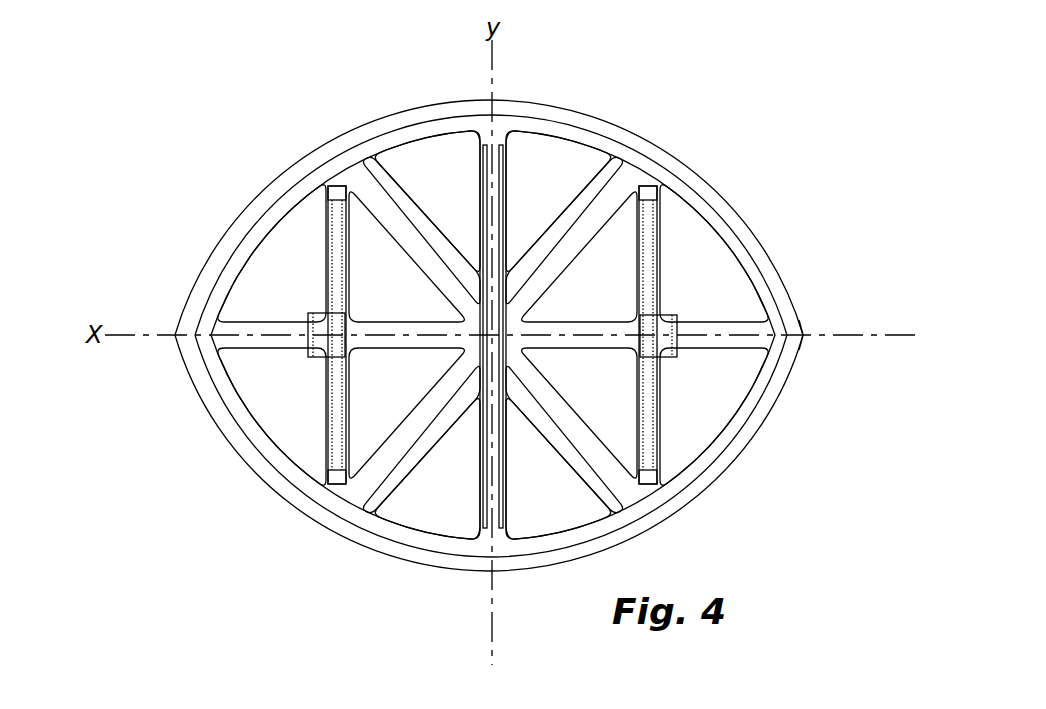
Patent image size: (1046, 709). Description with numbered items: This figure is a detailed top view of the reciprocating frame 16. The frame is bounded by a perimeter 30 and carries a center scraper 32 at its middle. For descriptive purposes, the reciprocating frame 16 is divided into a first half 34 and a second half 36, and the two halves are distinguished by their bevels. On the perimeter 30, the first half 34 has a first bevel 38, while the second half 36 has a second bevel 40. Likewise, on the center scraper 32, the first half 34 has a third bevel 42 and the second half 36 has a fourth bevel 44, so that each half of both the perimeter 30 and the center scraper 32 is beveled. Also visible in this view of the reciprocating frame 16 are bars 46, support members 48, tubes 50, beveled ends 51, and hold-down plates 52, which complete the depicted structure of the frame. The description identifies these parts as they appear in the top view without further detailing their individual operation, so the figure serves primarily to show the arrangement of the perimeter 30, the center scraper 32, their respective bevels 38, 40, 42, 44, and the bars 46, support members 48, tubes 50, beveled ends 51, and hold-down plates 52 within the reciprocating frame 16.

The reciprocating frame 16 is at (247, 156).
The perimeter 30 is at (799, 334).
The center scraper 32 is at (573, 210).
The first half 34 is at (752, 208).
The second half 36 is at (708, 502).
The first bevel 38 is at (617, 117).
The second bevel 40 is at (328, 535).
The third bevel 42 is at (397, 183).
The fourth bevel 44 is at (406, 490).
The bars 46 is at (498, 181).
The support members 48 is at (321, 262).
The tubes 50 is at (331, 297).
The beveled ends 51 is at (651, 196).
The hold-down plates 52 is at (650, 228).